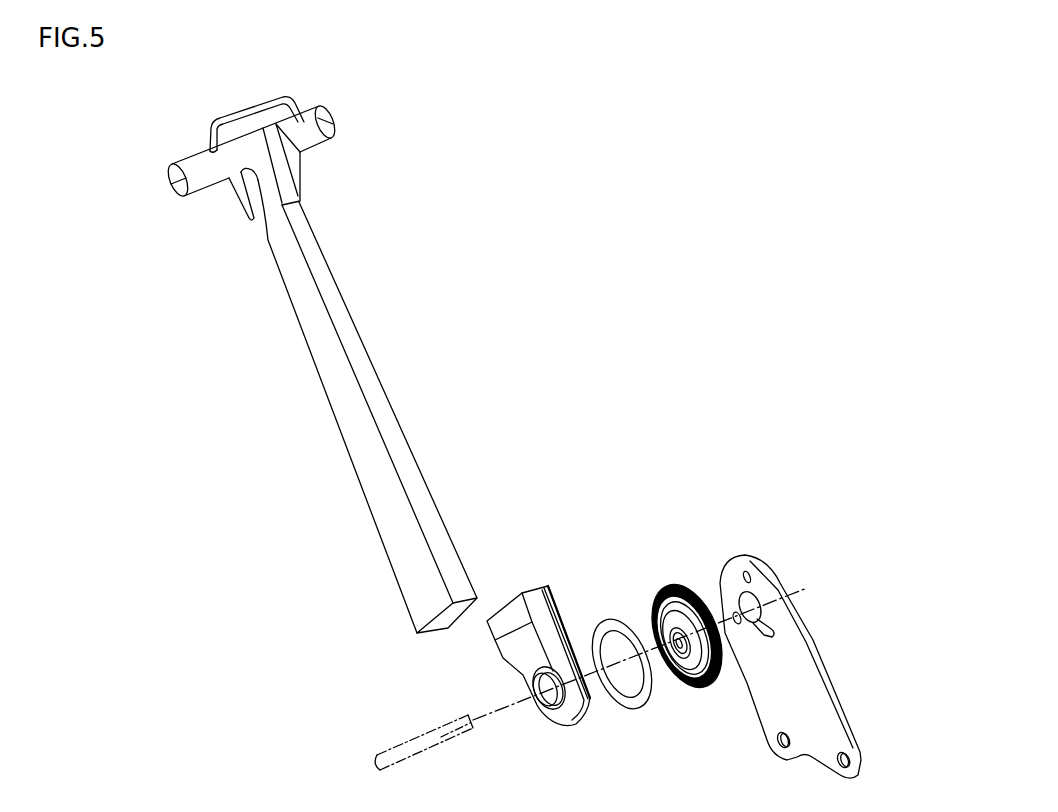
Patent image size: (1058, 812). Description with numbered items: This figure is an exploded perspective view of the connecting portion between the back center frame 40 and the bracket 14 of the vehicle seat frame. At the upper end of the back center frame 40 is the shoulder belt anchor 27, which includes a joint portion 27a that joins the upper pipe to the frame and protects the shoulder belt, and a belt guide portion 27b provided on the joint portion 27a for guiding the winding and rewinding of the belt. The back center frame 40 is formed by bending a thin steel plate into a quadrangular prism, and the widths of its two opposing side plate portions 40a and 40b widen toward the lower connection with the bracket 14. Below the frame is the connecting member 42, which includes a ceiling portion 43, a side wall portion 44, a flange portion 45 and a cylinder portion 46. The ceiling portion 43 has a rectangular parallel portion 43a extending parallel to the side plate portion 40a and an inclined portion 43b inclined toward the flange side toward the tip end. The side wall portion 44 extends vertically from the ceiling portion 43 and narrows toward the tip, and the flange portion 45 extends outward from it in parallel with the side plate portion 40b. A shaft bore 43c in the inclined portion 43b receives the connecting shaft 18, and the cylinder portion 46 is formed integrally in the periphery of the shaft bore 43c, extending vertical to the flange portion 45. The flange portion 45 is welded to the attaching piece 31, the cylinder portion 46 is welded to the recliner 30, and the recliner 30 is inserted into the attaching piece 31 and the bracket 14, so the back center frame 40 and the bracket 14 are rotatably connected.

The bracket 14 is at (800, 666).
The connecting shaft 18 is at (403, 741).
The shoulder belt anchor 27 is at (113, 124).
The joint portion 27a is at (187, 160).
The belt guide portion 27b is at (214, 118).
The recliner 30 is at (696, 576).
The attaching piece 31 is at (619, 602).
The back center frame 40 is at (282, 380).
The side plate portion 40a is at (363, 464).
The side plate portion 40b is at (398, 452).
The connecting member 42 is at (545, 552).
The ceiling portion 43 is at (419, 648).
The rectangular parallel portion 43a is at (508, 630).
The inclined portion 43b is at (520, 667).
The shaft bore 43c is at (558, 710).
The side wall portion 44 is at (537, 602).
The flange portion 45 is at (562, 612).
The cylinder portion 46 is at (538, 707).